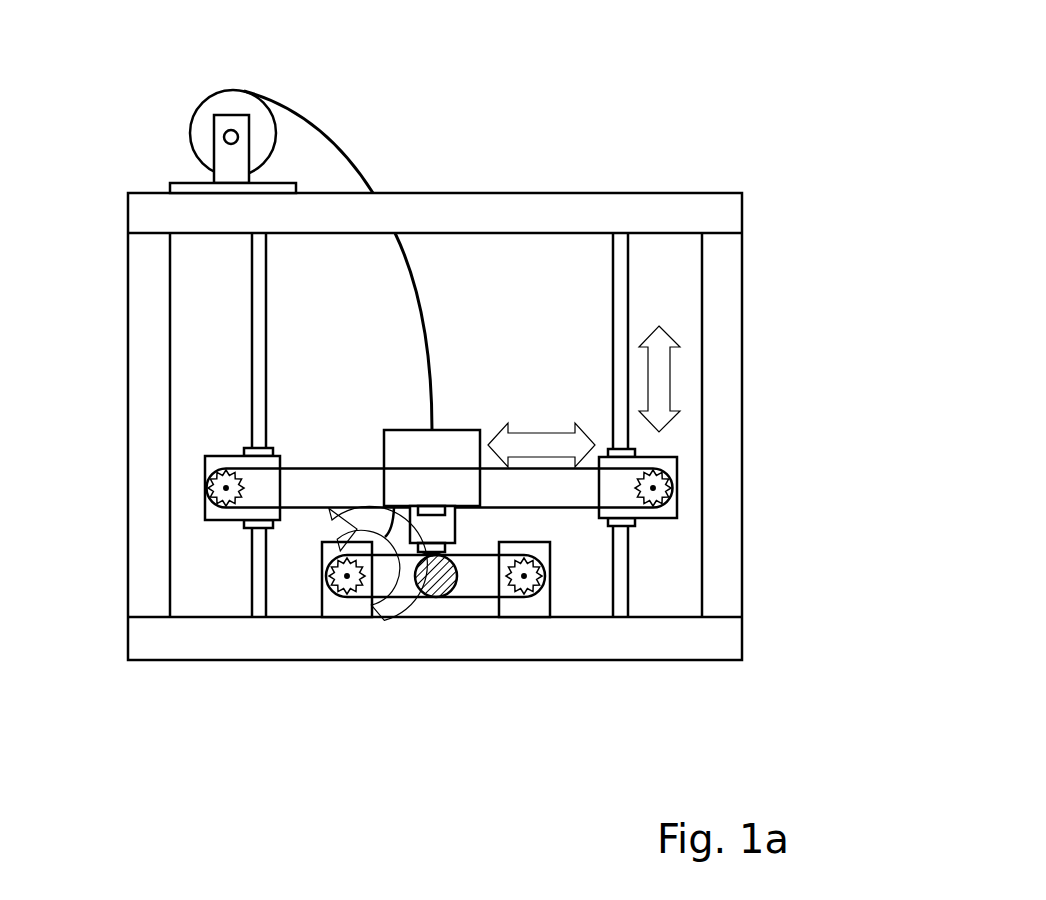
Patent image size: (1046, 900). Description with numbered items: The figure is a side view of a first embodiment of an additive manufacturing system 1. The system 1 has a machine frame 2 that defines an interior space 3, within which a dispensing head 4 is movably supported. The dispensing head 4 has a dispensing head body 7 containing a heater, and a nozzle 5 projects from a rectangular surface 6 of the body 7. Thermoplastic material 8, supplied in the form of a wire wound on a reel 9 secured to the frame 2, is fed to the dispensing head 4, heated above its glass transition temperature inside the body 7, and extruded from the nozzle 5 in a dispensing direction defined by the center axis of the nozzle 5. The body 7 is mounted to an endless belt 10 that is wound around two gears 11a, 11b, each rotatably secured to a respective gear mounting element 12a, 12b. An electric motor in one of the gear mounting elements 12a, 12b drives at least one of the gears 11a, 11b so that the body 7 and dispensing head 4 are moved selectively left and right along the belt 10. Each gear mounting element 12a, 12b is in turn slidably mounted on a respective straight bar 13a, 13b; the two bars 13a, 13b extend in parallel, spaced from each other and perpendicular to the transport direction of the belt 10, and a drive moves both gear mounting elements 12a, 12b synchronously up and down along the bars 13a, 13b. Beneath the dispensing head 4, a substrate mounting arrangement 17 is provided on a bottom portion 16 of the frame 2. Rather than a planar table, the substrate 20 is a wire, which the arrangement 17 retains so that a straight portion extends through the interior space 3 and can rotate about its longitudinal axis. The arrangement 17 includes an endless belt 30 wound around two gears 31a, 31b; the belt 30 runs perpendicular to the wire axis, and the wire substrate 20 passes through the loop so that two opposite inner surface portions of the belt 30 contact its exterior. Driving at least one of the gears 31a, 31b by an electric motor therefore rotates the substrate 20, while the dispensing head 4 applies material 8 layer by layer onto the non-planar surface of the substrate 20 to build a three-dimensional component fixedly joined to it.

The system 1 is at (712, 61).
The frame 2 is at (501, 208).
The interior space 3 is at (538, 318).
The dispensing head 4 is at (454, 443).
The nozzle 5 is at (445, 527).
The rectangular surface 6 is at (385, 537).
The dispensing head body 7 is at (398, 443).
The thermoplastic material 8 is at (312, 123).
The reel 9 is at (199, 122).
The endless belt 10 is at (332, 467).
The gear 11a is at (208, 485).
The gear 11b is at (657, 477).
The gear mounting element 12a is at (208, 512).
The gear mounting element 12b is at (672, 508).
The straight bar 13a is at (255, 310).
The straight bar 13b is at (625, 292).
The bottom portion 16 is at (209, 640).
The substrate mounting arrangement 17 is at (560, 597).
The substrate 20 is at (435, 592).
The endless belt 30 is at (462, 597).
The gear 31a is at (340, 593).
The gear 31b is at (528, 585).